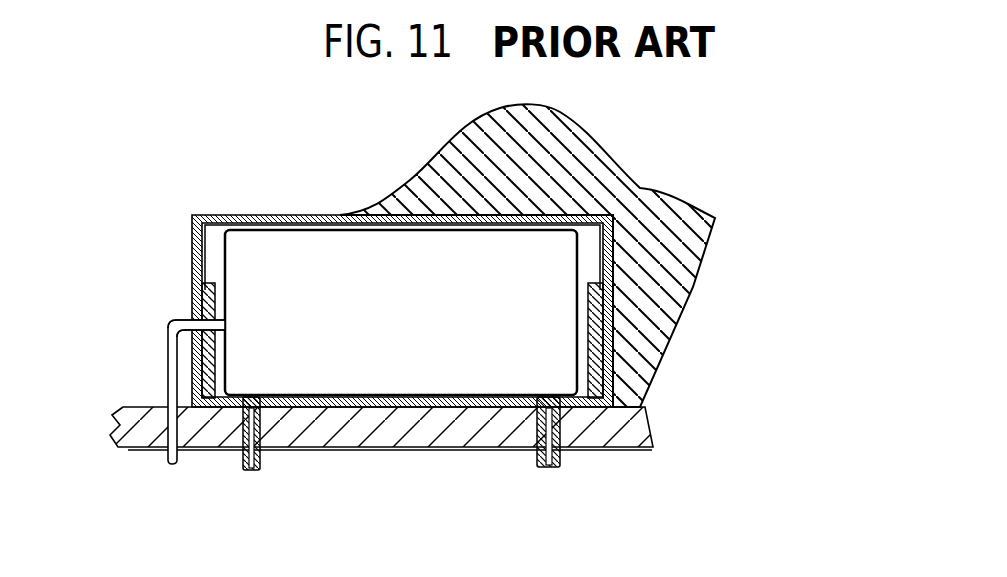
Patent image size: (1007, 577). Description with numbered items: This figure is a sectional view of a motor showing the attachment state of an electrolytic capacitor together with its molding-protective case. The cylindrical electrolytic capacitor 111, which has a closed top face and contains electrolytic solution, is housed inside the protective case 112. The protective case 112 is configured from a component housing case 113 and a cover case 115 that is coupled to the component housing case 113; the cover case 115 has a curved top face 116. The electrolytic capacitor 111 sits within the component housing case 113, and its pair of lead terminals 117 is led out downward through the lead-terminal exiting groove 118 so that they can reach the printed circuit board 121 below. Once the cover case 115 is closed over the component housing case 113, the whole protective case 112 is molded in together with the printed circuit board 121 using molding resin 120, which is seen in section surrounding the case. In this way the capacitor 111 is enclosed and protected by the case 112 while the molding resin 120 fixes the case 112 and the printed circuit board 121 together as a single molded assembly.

The electrolytic capacitor 111 is at (267, 250).
The protective case 112 is at (657, 363).
The component housing case 113 is at (606, 405).
The cover case 115 is at (613, 223).
The curved top face 116 is at (215, 213).
The lead terminals 117 is at (163, 365).
The lead-terminal exiting groove 118 is at (192, 316).
The molding resin 120 is at (670, 307).
The printed circuit board 121 is at (125, 446).